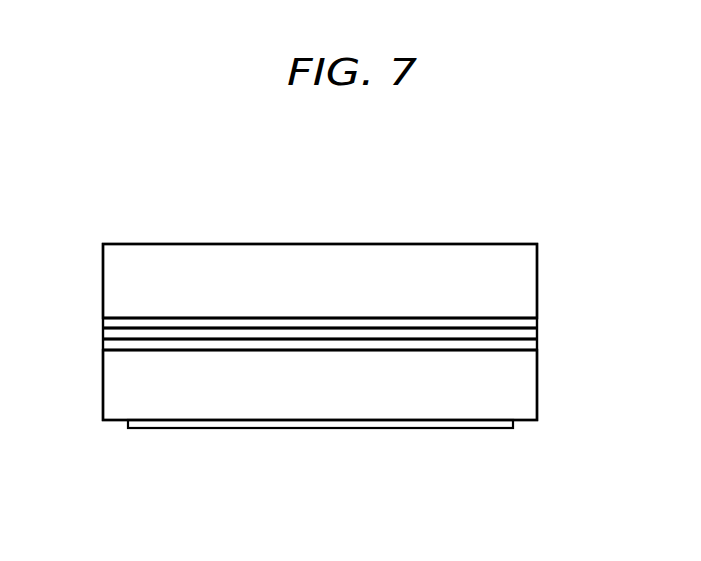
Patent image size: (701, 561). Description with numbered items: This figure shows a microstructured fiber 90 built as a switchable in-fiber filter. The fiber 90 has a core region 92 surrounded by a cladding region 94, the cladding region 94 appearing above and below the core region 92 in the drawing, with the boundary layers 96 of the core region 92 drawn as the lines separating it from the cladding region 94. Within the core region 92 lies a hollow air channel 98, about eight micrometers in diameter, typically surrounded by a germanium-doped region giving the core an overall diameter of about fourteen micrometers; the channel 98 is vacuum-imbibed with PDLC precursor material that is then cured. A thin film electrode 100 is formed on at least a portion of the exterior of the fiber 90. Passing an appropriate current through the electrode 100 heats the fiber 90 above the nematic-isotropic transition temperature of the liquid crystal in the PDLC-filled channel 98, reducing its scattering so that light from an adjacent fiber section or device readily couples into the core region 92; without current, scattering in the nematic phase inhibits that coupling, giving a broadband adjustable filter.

The microstructured fiber 90 is at (578, 212).
The core region 92 is at (550, 317).
The cladding region 94 is at (88, 248).
The outer layer of stack 96 is at (383, 318).
The hollow air channel 98 is at (300, 338).
The thin film electrode 100 is at (416, 428).